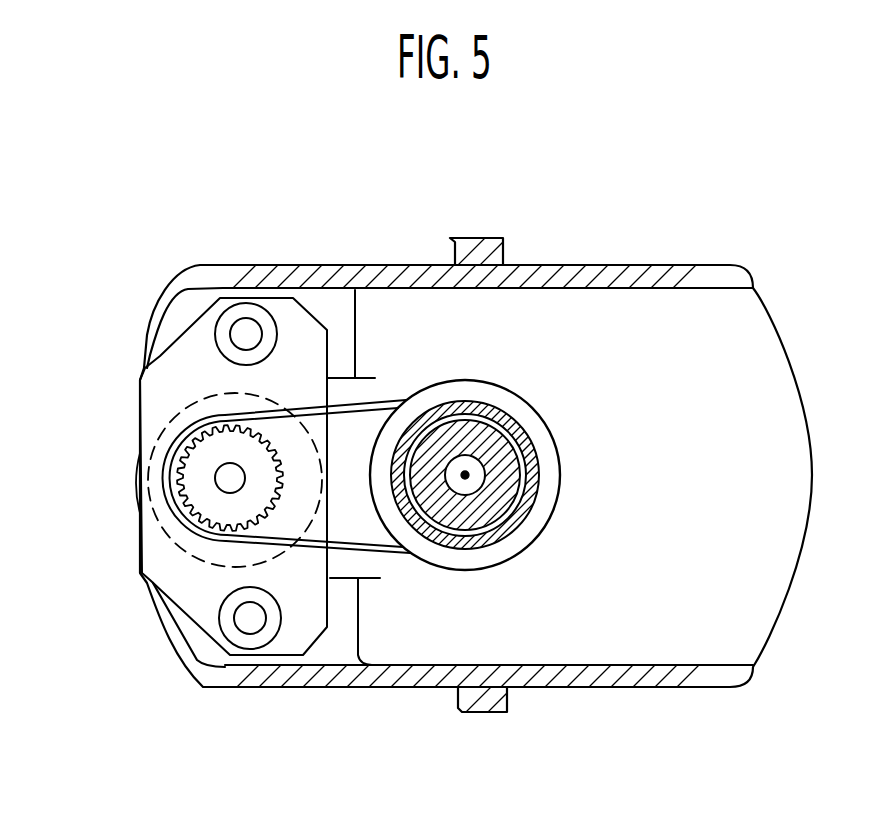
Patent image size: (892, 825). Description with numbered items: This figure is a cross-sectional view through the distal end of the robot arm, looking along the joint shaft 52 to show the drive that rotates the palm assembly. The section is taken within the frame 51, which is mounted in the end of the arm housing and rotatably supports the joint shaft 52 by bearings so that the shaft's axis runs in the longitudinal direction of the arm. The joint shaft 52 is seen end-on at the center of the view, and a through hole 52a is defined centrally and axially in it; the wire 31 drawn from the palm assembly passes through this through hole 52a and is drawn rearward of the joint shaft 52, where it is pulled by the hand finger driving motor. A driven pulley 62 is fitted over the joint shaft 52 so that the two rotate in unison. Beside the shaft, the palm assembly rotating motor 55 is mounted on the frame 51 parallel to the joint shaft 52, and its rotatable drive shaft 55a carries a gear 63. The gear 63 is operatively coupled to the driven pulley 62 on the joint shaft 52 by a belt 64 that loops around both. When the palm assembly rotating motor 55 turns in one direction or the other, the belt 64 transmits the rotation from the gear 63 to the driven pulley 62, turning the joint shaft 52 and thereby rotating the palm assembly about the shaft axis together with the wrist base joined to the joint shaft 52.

The frame 51 is at (593, 253).
The joint shaft 52 is at (502, 502).
The through hole 52a is at (512, 447).
The driven pulley 62 is at (562, 457).
The wire 31 is at (465, 478).
The gear 63 is at (230, 450).
The palm assembly rotating motor 55 is at (137, 480).
The drive shaft 55a is at (222, 482).
The belt 64 is at (322, 545).